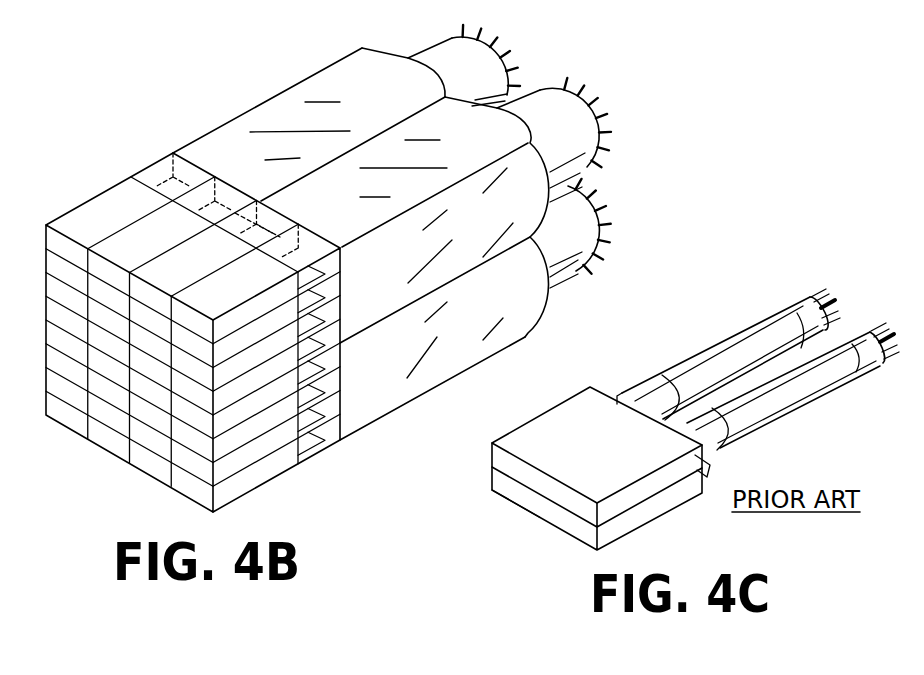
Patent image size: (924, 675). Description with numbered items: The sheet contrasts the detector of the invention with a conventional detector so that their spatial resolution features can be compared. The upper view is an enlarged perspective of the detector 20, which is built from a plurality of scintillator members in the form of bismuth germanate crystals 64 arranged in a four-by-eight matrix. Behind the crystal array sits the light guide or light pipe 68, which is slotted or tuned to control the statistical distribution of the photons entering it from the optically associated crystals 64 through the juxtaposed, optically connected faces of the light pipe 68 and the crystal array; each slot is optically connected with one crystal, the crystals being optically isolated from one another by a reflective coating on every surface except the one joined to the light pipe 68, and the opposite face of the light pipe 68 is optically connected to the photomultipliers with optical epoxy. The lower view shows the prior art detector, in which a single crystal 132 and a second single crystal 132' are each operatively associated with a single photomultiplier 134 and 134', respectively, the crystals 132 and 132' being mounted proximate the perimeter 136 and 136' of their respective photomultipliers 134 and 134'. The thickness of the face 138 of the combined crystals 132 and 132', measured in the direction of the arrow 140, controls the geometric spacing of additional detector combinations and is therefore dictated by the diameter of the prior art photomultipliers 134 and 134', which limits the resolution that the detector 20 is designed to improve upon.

In FIG. 4B, the detector 20 is at (265, 82).
In FIG. 4B, the bismuth germanate crystals 64 is at (80, 204).
In FIG. 4B, the light pipe 68 is at (157, 174).
In FIG. 4C, the single crystal 132 is at (597, 454).
In FIG. 4C, the single crystal 132' is at (611, 508).
In FIG. 4C, the photomultiplier 134 is at (731, 340).
In FIG. 4C, the photomultiplier 134' is at (793, 386).
In FIG. 4C, the perimeter 136 is at (653, 357).
In FIG. 4C, the perimeter 136' is at (743, 465).
In FIG. 4C, the face 138 is at (528, 513).
In FIG. 4C, the arrow 140 is at (482, 510).